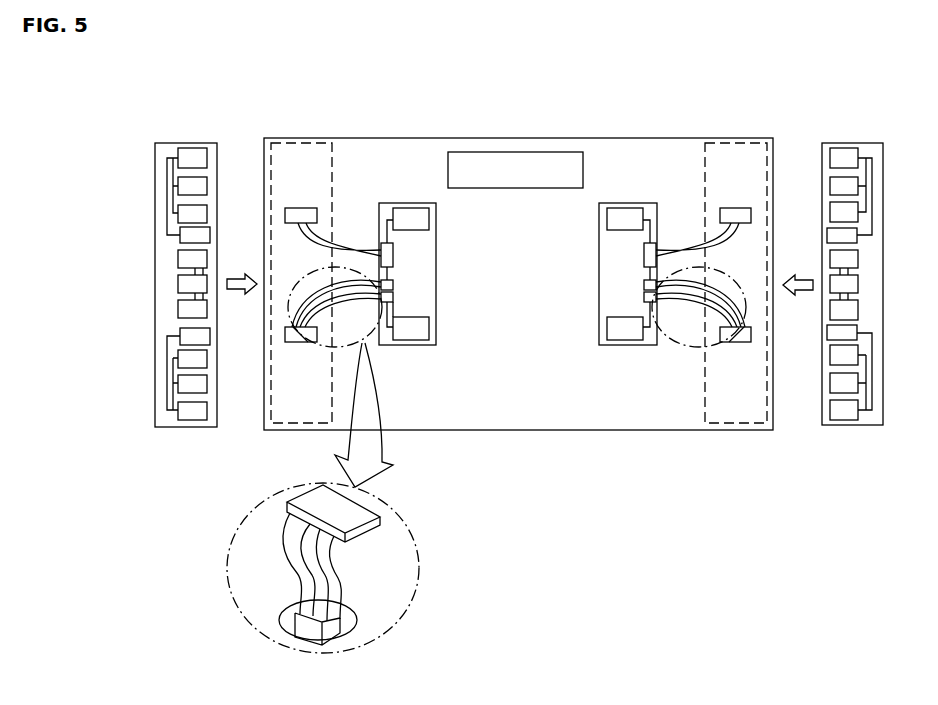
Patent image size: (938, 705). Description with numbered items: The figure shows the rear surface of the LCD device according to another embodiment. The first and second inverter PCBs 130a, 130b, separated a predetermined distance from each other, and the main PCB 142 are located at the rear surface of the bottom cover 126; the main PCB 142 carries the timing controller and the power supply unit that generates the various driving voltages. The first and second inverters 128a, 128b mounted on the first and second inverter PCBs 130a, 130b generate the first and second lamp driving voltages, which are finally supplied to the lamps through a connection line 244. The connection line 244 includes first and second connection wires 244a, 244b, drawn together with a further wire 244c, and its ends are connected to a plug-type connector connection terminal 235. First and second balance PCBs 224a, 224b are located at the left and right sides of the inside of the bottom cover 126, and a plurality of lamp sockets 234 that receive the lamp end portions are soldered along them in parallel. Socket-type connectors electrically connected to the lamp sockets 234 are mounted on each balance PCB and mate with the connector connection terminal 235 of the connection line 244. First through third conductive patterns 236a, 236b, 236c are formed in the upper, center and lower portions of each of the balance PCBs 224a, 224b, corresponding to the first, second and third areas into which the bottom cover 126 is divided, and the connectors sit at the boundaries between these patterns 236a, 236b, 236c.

The bottom cover 126 is at (543, 137).
The main PCB 142 is at (480, 152).
The first inverter PCB 130a is at (463, 228).
The second inverter PCB 130b is at (622, 202).
The first inverter 128a is at (423, 218).
The second inverter 128b is at (423, 333).
The first balance PCB 224a is at (199, 259).
The second balance PCB 224b is at (715, 142).
The lamp socket 234 is at (203, 157).
The first conductive pattern 236a is at (176, 186).
The second conductive pattern 236b is at (190, 272).
The third conductive pattern 236c is at (170, 365).
The connection line 244 is at (332, 422).
The first connection wire 244a is at (393, 281).
The second connection wire 244b is at (393, 294).
The third wire 244c is at (393, 246).
The connector connection terminal 235 is at (395, 303).